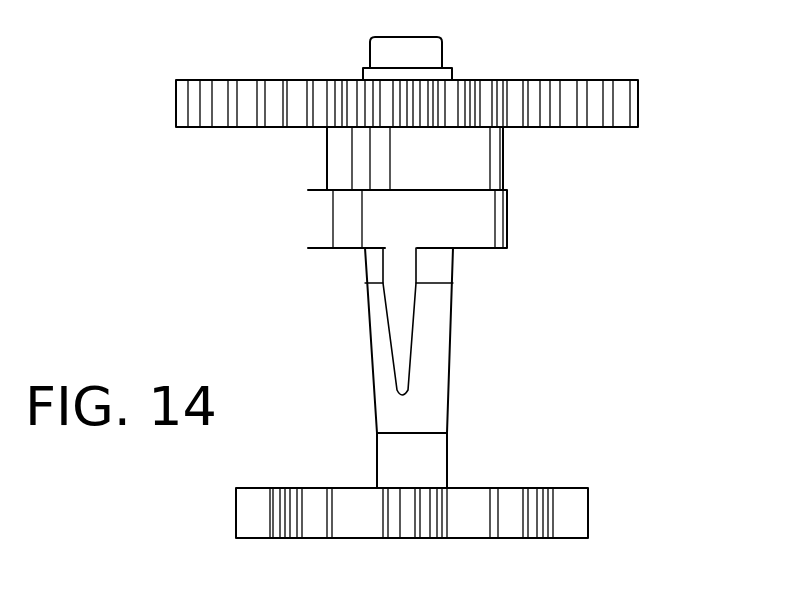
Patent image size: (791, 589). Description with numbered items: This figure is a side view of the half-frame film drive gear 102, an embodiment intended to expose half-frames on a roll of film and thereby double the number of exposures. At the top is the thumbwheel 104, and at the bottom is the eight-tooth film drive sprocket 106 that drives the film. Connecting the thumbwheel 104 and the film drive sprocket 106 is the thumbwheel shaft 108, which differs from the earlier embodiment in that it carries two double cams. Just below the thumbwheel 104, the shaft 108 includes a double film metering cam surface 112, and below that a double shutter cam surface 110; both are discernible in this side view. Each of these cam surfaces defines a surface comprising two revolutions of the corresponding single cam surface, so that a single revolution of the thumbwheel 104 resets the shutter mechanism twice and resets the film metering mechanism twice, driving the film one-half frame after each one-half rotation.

The half-frame film drive gear 102 is at (683, 52).
The thumbwheel 104 is at (638, 118).
The eight-tooth film drive sprocket 106 is at (588, 505).
The thumbwheel shaft 108 is at (447, 449).
The double shutter cam surface 110 is at (507, 235).
The double film metering cam surface 112 is at (503, 168).